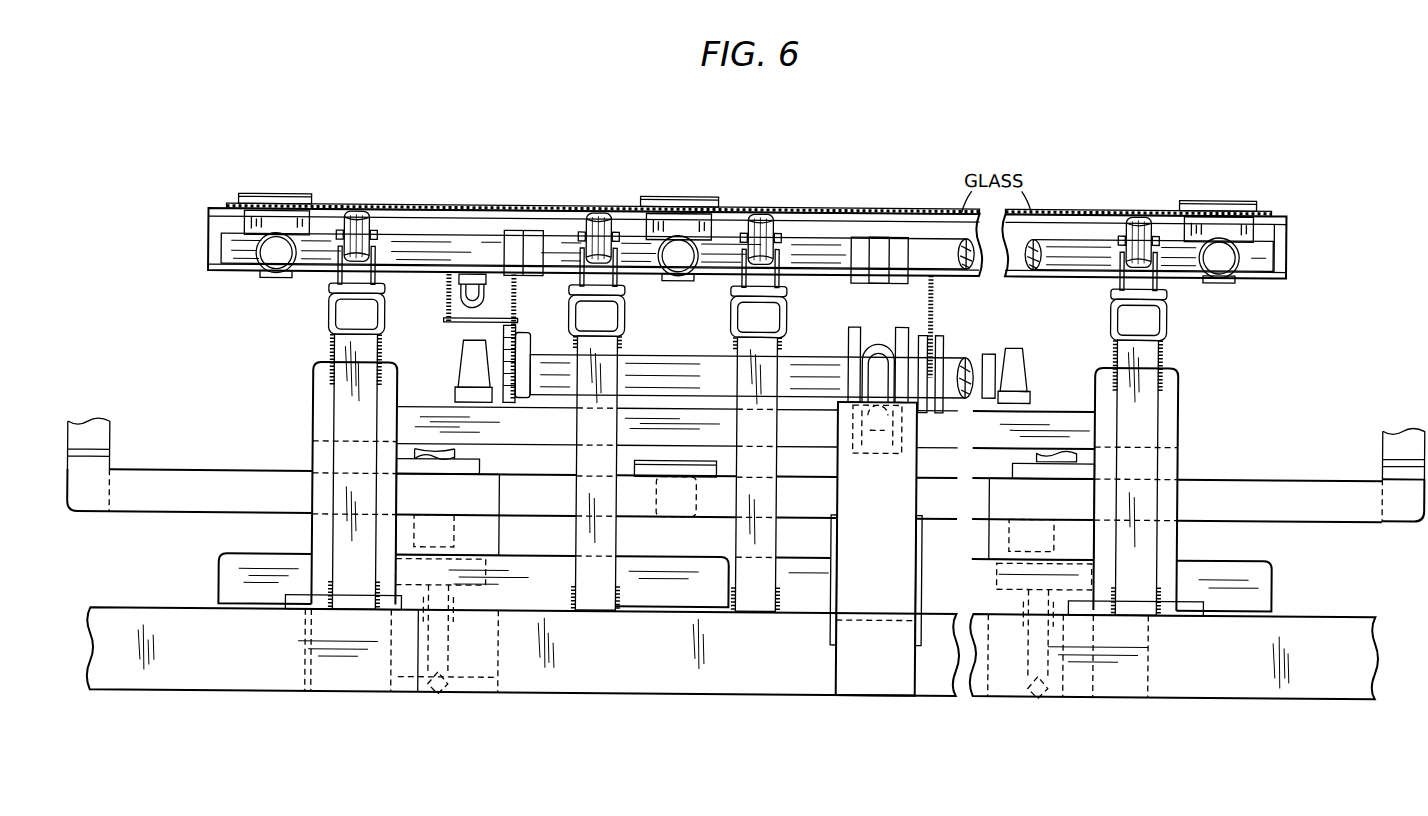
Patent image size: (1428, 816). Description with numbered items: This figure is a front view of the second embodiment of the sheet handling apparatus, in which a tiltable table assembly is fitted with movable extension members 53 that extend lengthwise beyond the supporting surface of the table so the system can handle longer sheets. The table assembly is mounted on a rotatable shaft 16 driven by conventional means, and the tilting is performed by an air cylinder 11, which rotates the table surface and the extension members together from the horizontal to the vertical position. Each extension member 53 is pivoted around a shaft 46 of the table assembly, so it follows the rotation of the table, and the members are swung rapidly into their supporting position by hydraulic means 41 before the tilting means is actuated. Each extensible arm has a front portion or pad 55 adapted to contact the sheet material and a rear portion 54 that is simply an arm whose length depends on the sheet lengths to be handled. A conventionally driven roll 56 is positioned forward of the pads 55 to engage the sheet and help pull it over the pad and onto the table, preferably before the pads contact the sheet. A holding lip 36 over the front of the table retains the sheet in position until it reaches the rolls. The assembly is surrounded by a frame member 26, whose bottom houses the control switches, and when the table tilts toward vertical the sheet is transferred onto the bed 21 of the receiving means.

The air cylinder 11 is at (855, 360).
The rotatable shaft 16 is at (958, 355).
The bed 21 is at (480, 455).
The frame member 26 is at (198, 470).
The holding lip 36 is at (270, 193).
The hydraulic means 41 is at (462, 305).
The shaft 46 is at (237, 260).
The extension members 53 is at (275, 285).
The rear portion 54 is at (283, 258).
The pads 55 is at (302, 214).
The roll 56 is at (356, 216).